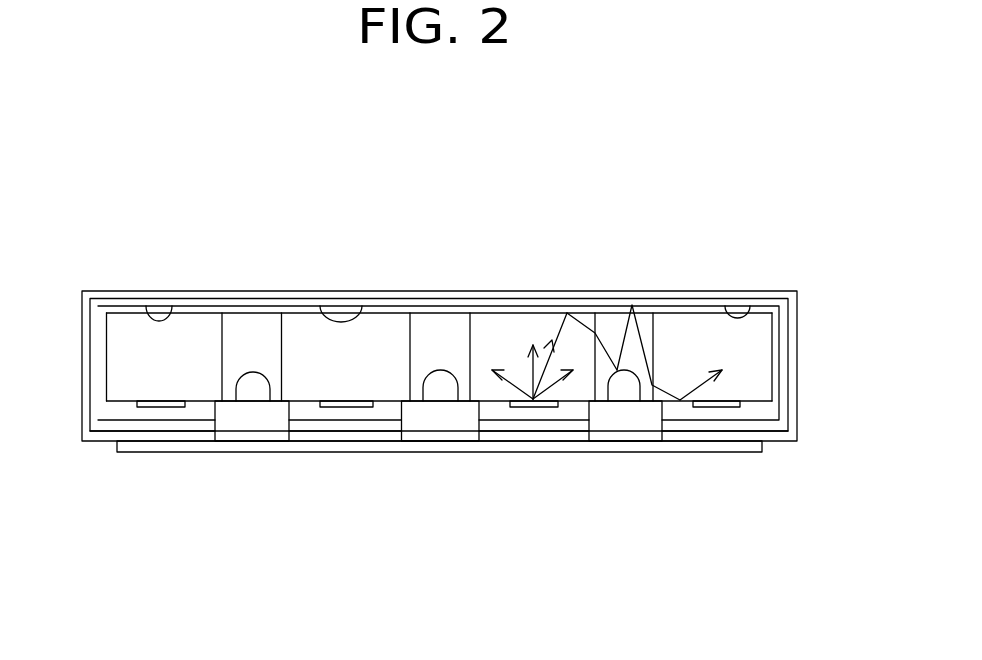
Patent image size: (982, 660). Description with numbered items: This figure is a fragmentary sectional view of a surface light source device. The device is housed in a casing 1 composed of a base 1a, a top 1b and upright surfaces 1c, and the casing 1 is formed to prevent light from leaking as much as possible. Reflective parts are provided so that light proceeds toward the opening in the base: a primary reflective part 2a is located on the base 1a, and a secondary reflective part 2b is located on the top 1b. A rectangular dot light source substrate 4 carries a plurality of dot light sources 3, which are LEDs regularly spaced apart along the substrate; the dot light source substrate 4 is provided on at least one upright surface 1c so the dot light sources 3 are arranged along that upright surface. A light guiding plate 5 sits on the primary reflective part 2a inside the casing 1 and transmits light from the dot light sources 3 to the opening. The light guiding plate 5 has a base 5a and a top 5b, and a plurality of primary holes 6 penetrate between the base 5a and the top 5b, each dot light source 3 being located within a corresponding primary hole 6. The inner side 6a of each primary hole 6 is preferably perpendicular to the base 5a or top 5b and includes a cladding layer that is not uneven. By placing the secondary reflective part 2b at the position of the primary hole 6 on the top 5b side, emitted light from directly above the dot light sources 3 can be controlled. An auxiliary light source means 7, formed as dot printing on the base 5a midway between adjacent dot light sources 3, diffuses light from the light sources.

The casing 1 is at (693, 293).
The base 1a is at (290, 423).
The top 1b is at (142, 297).
The upright surface 1c is at (92, 363).
The primary reflective part 2a is at (387, 417).
The secondary reflective part 2b is at (360, 310).
The dot light source 3 is at (621, 392).
The dot light source substrate 4 is at (552, 443).
The light guiding plate 5 is at (678, 342).
The base of light guiding plate 5a is at (755, 397).
The top of light guiding plate 5b is at (750, 308).
The primary hole 6 is at (242, 333).
The inner side of primary hole 6a is at (280, 338).
The auxiliary light source means 7 is at (158, 403).